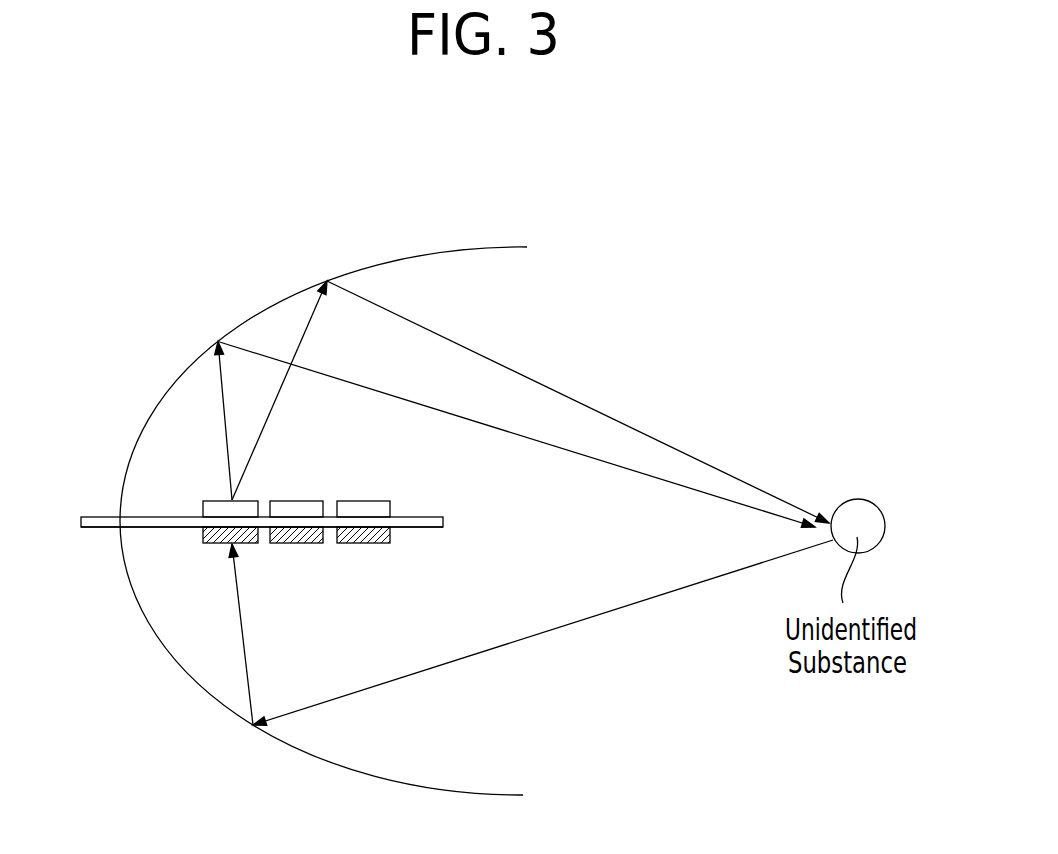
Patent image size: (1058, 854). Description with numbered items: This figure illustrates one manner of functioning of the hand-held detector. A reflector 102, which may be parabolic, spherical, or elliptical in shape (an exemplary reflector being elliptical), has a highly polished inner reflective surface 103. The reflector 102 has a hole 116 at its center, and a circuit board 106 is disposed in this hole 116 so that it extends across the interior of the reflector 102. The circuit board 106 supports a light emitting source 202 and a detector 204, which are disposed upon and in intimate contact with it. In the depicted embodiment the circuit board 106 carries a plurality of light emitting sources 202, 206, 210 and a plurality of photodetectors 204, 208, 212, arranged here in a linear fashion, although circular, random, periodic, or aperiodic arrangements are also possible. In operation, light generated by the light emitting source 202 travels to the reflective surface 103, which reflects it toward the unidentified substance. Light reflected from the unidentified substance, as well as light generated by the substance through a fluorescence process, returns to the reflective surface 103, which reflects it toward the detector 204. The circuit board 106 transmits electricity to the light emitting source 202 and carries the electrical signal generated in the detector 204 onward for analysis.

The reflector 102 is at (448, 251).
The reflective surface 103 is at (460, 791).
The circuit board 106 is at (108, 517).
The hole 116 is at (108, 527).
The light emitting source 202 is at (215, 500).
The detector 204 is at (202, 533).
The light emitting source 206 is at (300, 500).
The photodetector 208 is at (300, 545).
The light emitting source 210 is at (366, 500).
The photodetector 212 is at (368, 545).